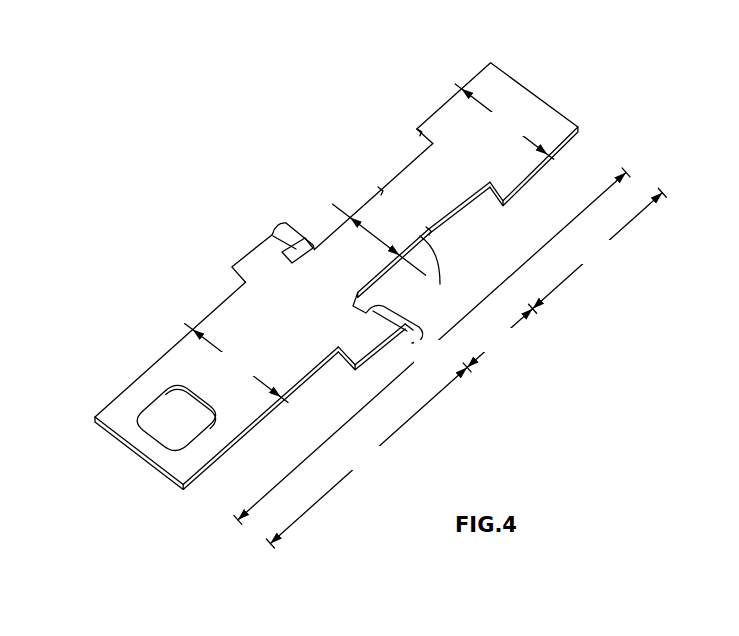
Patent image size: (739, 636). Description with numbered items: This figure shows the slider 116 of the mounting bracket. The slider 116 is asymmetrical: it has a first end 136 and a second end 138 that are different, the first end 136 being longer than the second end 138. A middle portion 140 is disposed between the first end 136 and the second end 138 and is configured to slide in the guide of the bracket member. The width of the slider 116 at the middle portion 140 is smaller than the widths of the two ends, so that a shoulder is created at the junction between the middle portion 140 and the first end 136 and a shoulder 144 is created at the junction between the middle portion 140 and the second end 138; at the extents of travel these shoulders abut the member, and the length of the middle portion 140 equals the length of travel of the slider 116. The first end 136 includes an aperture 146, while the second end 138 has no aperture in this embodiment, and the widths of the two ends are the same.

The slider 116 is at (148, 52).
The first end 136 is at (118, 415).
The second end 138 is at (503, 87).
The middle portion 140 is at (348, 216).
The shoulder 144 is at (420, 232).
The aperture 146 is at (178, 460).